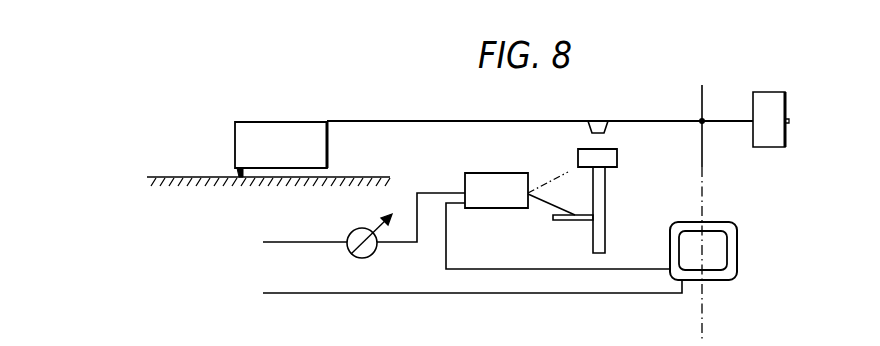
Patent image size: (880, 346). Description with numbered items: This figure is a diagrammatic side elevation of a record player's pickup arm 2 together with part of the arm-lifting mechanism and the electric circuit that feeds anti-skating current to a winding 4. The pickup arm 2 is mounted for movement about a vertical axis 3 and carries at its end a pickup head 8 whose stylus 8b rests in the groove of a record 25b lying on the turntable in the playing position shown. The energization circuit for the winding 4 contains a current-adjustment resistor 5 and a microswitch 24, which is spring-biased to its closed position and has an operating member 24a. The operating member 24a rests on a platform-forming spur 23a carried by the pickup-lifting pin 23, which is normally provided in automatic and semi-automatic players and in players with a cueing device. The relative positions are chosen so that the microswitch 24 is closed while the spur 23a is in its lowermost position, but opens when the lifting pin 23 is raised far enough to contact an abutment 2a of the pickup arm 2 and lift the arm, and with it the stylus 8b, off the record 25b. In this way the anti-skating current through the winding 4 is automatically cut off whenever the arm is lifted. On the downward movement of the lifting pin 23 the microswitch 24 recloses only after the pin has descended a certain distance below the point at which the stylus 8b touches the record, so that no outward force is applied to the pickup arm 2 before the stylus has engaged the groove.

The pickup arm 2 is at (415, 121).
The abutment 2a is at (608, 126).
The vertical axis 3 is at (701, 93).
The winding 4 is at (730, 229).
The current-adjustment resistor 5 is at (375, 254).
The pickup head 8 is at (316, 143).
The stylus 8b is at (240, 176).
The pickup-lifting pin 23 is at (605, 193).
The platform-forming spur 23a is at (567, 220).
The microswitch 24 is at (488, 173).
The operating member 24a is at (551, 204).
The record 25b is at (160, 177).